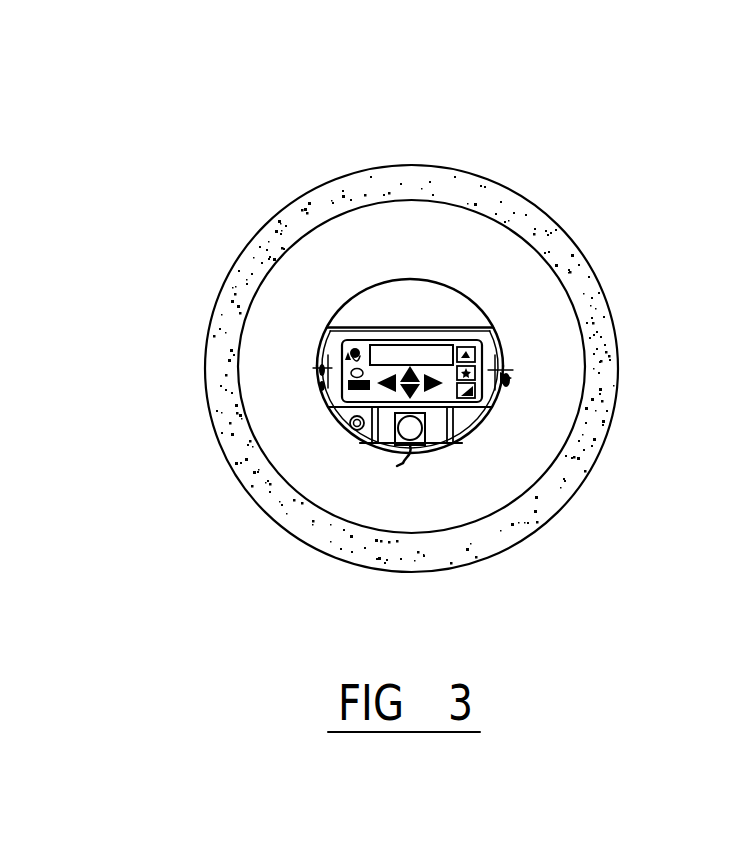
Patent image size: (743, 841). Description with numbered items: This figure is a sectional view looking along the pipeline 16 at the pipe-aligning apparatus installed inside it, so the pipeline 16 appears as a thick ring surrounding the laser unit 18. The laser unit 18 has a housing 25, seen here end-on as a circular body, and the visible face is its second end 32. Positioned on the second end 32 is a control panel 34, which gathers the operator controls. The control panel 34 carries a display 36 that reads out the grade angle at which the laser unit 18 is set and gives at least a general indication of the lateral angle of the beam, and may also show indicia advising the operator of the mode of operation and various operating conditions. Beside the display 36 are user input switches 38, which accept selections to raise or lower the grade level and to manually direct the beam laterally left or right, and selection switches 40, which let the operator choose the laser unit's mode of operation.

The pipeline 16 is at (482, 175).
The laser unit 18 is at (490, 318).
The housing 25 is at (457, 285).
The second end 32 is at (382, 279).
The control panel 34 is at (485, 375).
The display 36 is at (393, 353).
The user input switches 38 is at (398, 393).
The selection switches 40 is at (465, 352).